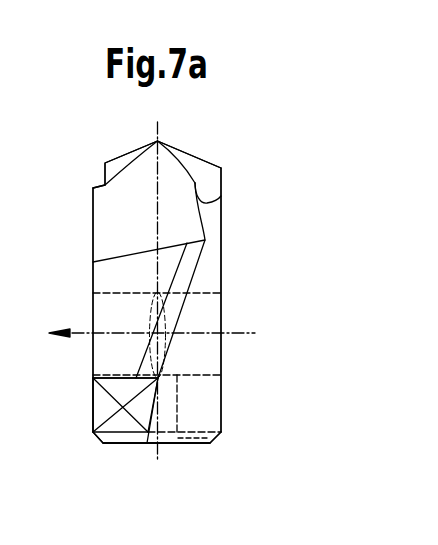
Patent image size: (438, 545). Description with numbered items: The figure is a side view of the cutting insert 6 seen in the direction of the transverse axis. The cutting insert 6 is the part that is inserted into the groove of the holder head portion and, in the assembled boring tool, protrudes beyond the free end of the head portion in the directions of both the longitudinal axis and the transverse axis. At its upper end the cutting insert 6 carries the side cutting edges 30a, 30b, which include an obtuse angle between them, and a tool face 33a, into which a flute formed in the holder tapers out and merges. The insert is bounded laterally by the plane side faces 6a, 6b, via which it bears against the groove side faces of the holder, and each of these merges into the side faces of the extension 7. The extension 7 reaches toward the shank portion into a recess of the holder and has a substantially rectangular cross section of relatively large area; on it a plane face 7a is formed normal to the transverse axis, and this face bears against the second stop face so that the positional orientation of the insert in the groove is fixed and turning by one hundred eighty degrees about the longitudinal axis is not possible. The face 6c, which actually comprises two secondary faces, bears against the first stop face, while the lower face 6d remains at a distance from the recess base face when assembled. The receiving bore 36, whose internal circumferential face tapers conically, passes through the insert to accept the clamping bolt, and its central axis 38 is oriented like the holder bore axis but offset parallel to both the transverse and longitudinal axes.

The cutting insert 6 is at (221, 238).
The side face 6a is at (223, 213).
The side face 6b is at (93, 223).
The face 6c is at (197, 374).
The lower face 6d is at (183, 444).
The extension 7 is at (110, 444).
The plane face 7a is at (102, 412).
The side cutting edge 30a is at (106, 163).
The side cutting edge 30b is at (197, 162).
The tool face 33a is at (205, 278).
The receiving bore 36 is at (110, 360).
The central axis 38 is at (233, 335).